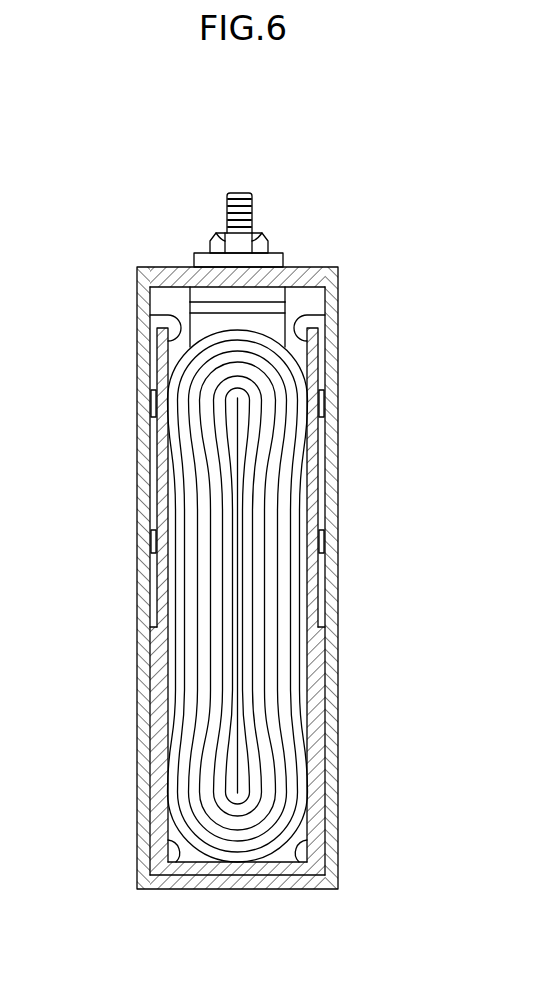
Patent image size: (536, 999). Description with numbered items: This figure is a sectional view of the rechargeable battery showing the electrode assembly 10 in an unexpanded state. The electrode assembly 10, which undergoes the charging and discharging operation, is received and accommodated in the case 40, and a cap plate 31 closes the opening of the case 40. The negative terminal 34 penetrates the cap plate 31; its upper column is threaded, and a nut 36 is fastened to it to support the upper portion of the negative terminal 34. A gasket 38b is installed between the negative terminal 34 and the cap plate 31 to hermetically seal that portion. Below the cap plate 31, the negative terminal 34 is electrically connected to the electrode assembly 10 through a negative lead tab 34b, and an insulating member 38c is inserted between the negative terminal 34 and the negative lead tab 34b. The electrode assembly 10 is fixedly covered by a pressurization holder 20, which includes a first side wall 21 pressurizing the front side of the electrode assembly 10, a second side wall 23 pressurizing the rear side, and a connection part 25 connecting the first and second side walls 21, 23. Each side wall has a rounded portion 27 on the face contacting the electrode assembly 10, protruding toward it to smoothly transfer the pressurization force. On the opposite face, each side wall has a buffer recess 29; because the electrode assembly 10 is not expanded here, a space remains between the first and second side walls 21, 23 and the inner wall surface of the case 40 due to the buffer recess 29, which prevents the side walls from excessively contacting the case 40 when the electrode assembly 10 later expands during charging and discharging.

The electrode assembly 10 is at (268, 337).
The pressurization holder 20 is at (233, 919).
The first side wall 21 is at (299, 901).
The second side wall 23 is at (170, 872).
The connection part 25 is at (233, 870).
The rounded portion 27 is at (151, 316).
The buffer recess 29 is at (157, 352).
The cap plate 31 is at (161, 275).
The negative terminal 34 is at (240, 192).
The negative lead tab 34b is at (248, 322).
The nut 36 is at (259, 238).
The gasket 38b is at (203, 260).
The insulating member 38c is at (250, 295).
The case 40 is at (327, 480).